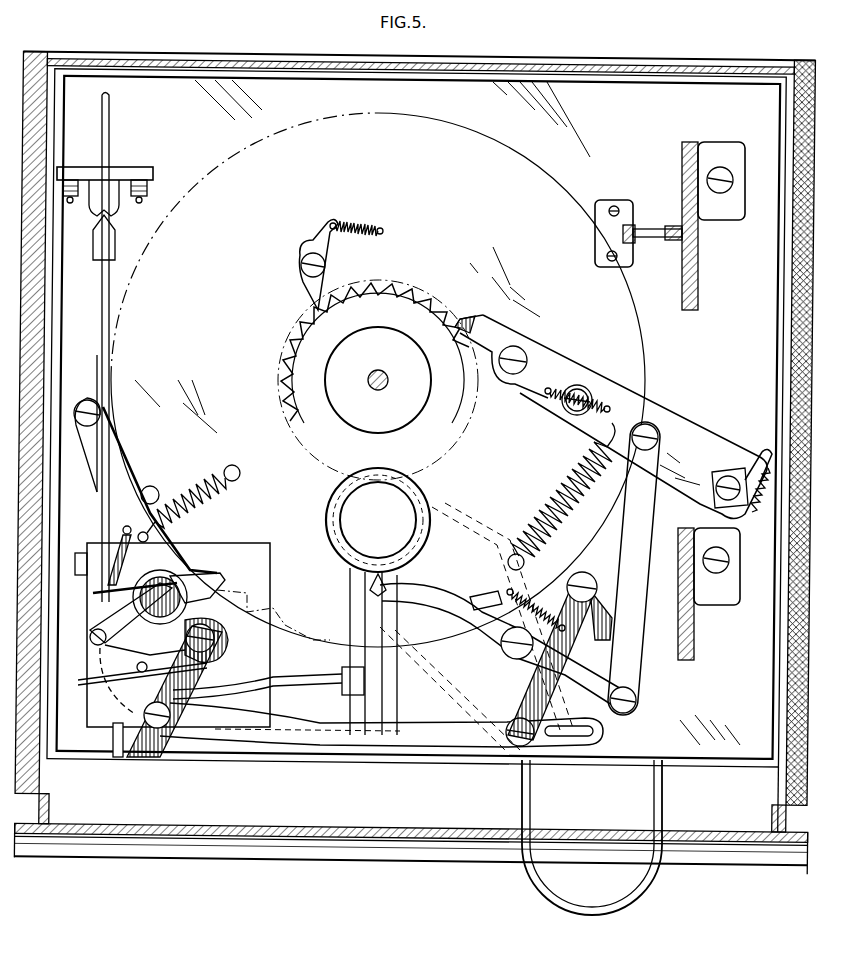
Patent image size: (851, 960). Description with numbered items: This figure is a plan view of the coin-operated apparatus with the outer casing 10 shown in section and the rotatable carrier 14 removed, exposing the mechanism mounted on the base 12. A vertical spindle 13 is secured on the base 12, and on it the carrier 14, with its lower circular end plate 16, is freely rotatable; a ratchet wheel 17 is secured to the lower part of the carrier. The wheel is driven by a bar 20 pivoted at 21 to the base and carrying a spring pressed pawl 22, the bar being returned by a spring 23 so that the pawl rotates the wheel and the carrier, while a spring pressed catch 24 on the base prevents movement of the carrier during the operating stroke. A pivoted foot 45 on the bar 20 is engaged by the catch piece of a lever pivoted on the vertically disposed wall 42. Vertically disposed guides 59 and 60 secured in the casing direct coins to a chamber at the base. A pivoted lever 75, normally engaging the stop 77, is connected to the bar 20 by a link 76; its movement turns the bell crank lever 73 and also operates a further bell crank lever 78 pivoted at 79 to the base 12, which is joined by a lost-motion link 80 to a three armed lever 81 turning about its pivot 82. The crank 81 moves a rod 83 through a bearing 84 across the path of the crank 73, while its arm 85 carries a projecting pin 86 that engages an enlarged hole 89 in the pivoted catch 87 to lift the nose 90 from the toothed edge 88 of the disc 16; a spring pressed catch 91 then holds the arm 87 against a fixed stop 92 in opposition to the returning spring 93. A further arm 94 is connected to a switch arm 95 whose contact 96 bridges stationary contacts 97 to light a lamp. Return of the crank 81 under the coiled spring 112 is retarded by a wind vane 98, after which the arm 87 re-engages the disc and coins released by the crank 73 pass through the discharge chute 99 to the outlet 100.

The outer casing 10 is at (331, 826).
The base 12 is at (243, 767).
The vertical spindle 13 is at (378, 370).
The carrier 14 is at (548, 173).
The circular end plate 16 is at (130, 306).
The ratchet wheel 17 is at (426, 292).
The bar 20 is at (668, 433).
The pivot 21 is at (586, 392).
The spring pressed pawl 22 is at (511, 334).
The spring 23 is at (550, 500).
The spring pressed catch 24 is at (323, 264).
The vertically disposed wall 42 is at (698, 300).
The pivoted foot 45 is at (722, 474).
The vertically disposed guide 59 is at (667, 229).
The vertically disposed guide 60 is at (610, 233).
The bell crank lever 73 is at (362, 613).
The pivoted lever 75 is at (449, 603).
The link 76 is at (636, 666).
The stop 77 is at (486, 597).
The bell crank lever 78 is at (537, 677).
The pivot 79 is at (585, 578).
The link 80 is at (421, 738).
The three armed lever 81 is at (145, 750).
The pivot 82 is at (216, 640).
The rod 83 is at (257, 689).
The bearing 84 is at (342, 672).
The arm 85 is at (188, 597).
The projecting pin 86 is at (158, 566).
The pivoted catch 87 is at (172, 551).
The toothed edge 88 is at (273, 614).
The enlarged hole 89 is at (151, 597).
The nose 90 is at (223, 577).
The spring pressed catch 91 is at (90, 594).
The fixed stop 92 is at (82, 552).
The returning spring 93 is at (193, 488).
The arm 94 is at (107, 648).
The switch arm 95 is at (97, 358).
The contact 96 is at (108, 143).
The stationary contacts 97 is at (118, 214).
The wind vane 98 is at (142, 681).
The discharge chute 99 is at (553, 794).
The outlet 100 is at (527, 835).
The coiled spring 112 is at (522, 592).